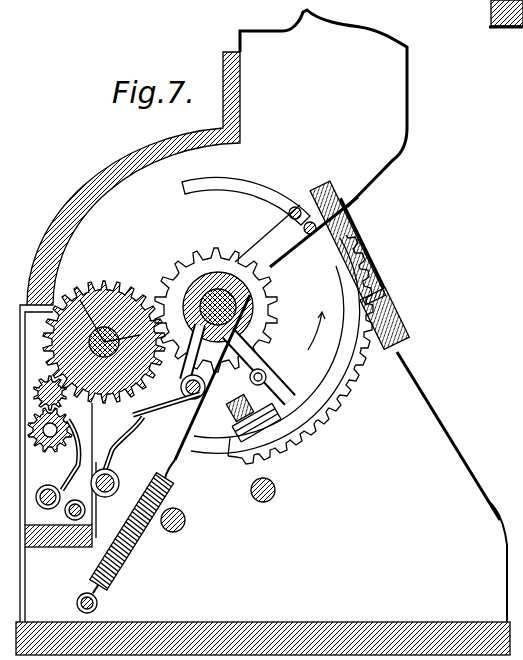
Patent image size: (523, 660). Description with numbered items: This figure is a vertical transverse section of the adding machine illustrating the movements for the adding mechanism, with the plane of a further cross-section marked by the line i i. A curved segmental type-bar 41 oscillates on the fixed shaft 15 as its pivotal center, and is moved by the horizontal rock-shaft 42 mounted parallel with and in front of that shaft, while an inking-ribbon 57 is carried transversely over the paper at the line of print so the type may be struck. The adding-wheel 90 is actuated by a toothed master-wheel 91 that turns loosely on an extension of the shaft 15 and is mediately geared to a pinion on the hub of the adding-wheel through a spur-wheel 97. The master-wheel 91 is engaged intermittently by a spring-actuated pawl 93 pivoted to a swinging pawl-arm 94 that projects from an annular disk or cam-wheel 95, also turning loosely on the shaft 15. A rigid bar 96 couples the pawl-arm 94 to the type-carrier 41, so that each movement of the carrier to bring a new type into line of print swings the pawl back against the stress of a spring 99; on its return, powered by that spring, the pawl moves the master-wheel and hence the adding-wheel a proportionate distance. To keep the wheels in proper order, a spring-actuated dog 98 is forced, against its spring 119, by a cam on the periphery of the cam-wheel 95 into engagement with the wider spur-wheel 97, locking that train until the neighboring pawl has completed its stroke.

The fixed shaft 15 is at (192, 286).
The segmental type-bar 41 is at (296, 232).
The rock-shaft 42 is at (80, 298).
The inking-ribbon 57 is at (360, 282).
The adding-wheel 90 is at (50, 452).
The master-wheel 91 is at (218, 252).
The pawl 93 is at (236, 399).
The swinging pawl-arm 94 is at (257, 368).
The cam-wheel 95 is at (228, 289).
The rigid bar 96 is at (228, 418).
The spur-wheel 97 is at (122, 290).
The spring-actuated dog 98 is at (182, 376).
The spring 99 is at (140, 533).
The spring 119 is at (113, 426).
The section line i is at (255, 293).